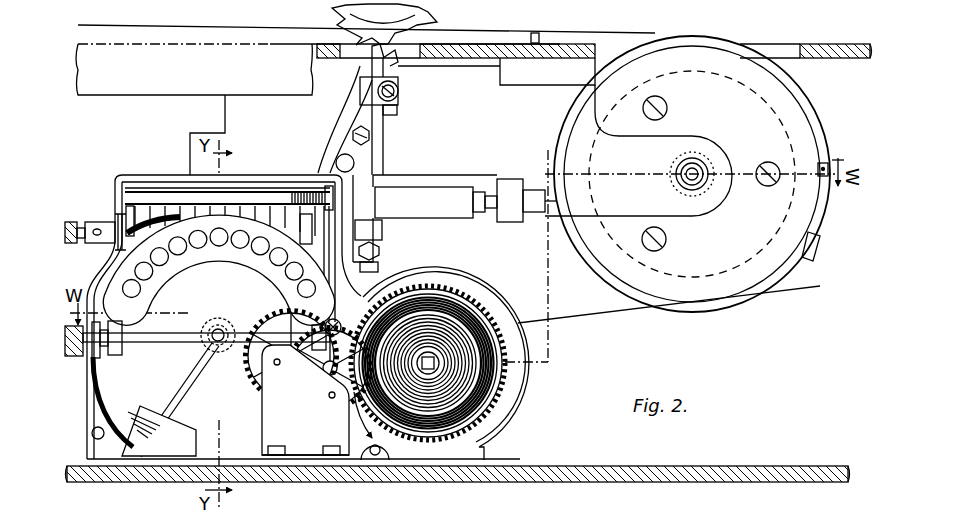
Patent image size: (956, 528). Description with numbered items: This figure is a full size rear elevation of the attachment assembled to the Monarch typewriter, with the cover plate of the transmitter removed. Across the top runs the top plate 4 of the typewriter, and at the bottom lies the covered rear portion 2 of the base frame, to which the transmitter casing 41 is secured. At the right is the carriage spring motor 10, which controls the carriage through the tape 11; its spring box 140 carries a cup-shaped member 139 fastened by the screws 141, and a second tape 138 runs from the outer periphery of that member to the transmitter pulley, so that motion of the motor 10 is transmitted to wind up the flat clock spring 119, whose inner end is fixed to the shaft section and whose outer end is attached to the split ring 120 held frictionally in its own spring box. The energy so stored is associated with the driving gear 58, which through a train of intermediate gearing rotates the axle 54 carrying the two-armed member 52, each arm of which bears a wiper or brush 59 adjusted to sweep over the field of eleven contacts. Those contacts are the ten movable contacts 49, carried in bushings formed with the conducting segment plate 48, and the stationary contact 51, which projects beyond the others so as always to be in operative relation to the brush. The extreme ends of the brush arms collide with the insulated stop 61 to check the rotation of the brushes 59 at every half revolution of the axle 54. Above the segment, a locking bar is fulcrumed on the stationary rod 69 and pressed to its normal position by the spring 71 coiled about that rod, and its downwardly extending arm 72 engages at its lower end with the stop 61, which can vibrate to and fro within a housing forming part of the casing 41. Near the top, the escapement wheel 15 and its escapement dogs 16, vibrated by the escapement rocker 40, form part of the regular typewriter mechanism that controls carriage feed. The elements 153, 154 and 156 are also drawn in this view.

The covered rear portion 2 is at (596, 470).
The top plate 4 is at (194, 109).
The spring motor 10 is at (778, 274).
The tape 11 is at (170, 28).
The escapement wheel 15 is at (432, 18).
The escapement dogs 16 is at (392, 68).
The escapement rocker 40 is at (454, 223).
The casing 41 is at (505, 303).
The segment plate 48 is at (218, 270).
The movable contact 49 is at (238, 247).
The stationary contact 51 is at (297, 289).
The two-armed member 52 is at (165, 342).
The axle 54 is at (217, 345).
The driving gear 58 is at (445, 288).
The wiper or brush 59 is at (118, 355).
The insulated stop 61 is at (336, 321).
The stationary rod 69 is at (147, 203).
The spring 71 is at (300, 200).
The downwardly extending arm 72 is at (328, 223).
The flat clock spring 119 is at (497, 385).
The split ring 120 is at (477, 417).
The tape 138 is at (588, 318).
The cup-shaped member 139 is at (692, 174).
The spring box 140 is at (803, 96).
The screws 141 is at (668, 106).
The brush 153 is at (104, 411).
The link 154 is at (168, 398).
The knob 156 is at (88, 222).